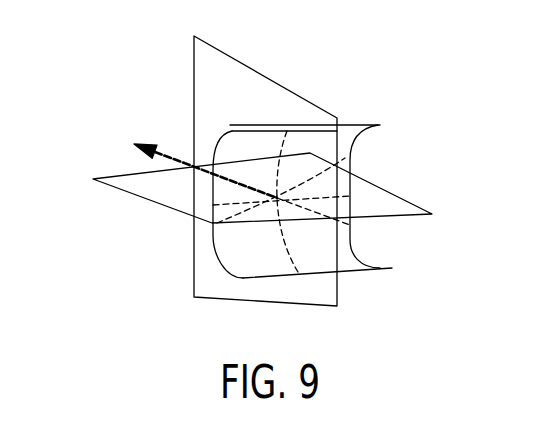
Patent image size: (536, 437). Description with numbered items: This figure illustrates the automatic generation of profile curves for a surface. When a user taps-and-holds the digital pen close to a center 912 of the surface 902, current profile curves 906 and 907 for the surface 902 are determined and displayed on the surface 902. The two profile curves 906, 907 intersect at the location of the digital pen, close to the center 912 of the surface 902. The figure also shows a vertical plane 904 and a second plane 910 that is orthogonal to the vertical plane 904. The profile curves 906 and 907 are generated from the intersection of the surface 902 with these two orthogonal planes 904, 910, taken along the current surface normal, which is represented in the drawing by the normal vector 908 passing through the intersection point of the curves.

The surface 902 is at (348, 123).
The vertical plane 904 is at (255, 70).
The profile curve 906 is at (282, 146).
The profile curve 907 is at (217, 223).
The normal vector 908 is at (197, 168).
The plane 910 is at (143, 199).
The center 912 is at (355, 153).